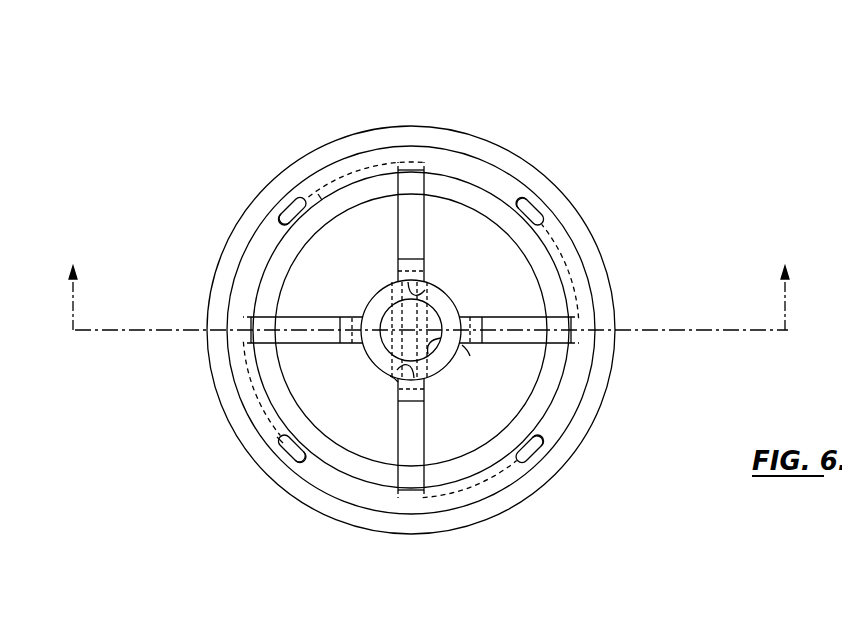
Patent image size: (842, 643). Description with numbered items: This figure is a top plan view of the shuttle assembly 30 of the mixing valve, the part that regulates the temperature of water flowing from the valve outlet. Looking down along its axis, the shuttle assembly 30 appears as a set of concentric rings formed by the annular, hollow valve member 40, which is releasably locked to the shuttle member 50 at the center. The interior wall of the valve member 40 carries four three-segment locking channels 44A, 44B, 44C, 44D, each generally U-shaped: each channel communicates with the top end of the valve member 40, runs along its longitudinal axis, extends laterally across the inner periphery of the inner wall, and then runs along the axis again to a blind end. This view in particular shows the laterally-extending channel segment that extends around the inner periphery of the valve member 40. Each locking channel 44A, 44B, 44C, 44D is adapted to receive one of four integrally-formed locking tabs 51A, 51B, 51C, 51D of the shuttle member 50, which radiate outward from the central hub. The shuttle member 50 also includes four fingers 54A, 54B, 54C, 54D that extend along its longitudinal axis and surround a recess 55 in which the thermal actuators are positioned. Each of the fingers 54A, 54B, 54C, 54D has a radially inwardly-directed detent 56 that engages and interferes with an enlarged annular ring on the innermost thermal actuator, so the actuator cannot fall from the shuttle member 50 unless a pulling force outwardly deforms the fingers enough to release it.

The shuttle assembly 30 is at (547, 102).
The valve member 40 is at (290, 163).
The shuttle member 50 is at (363, 293).
The locking tab 51A is at (558, 322).
The locking tab 51B is at (407, 468).
The locking tab 51C is at (350, 343).
The locking tab 51D is at (407, 202).
The locking channel 44A is at (513, 200).
The locking channel 44B is at (537, 437).
The locking channel 44C is at (283, 440).
The locking channel 44D is at (285, 220).
The finger 54A is at (468, 350).
The finger 54B is at (395, 378).
The finger 54C is at (277, 437).
The finger 54D is at (322, 200).
The recess 55 is at (457, 343).
The detent 56 is at (452, 316).